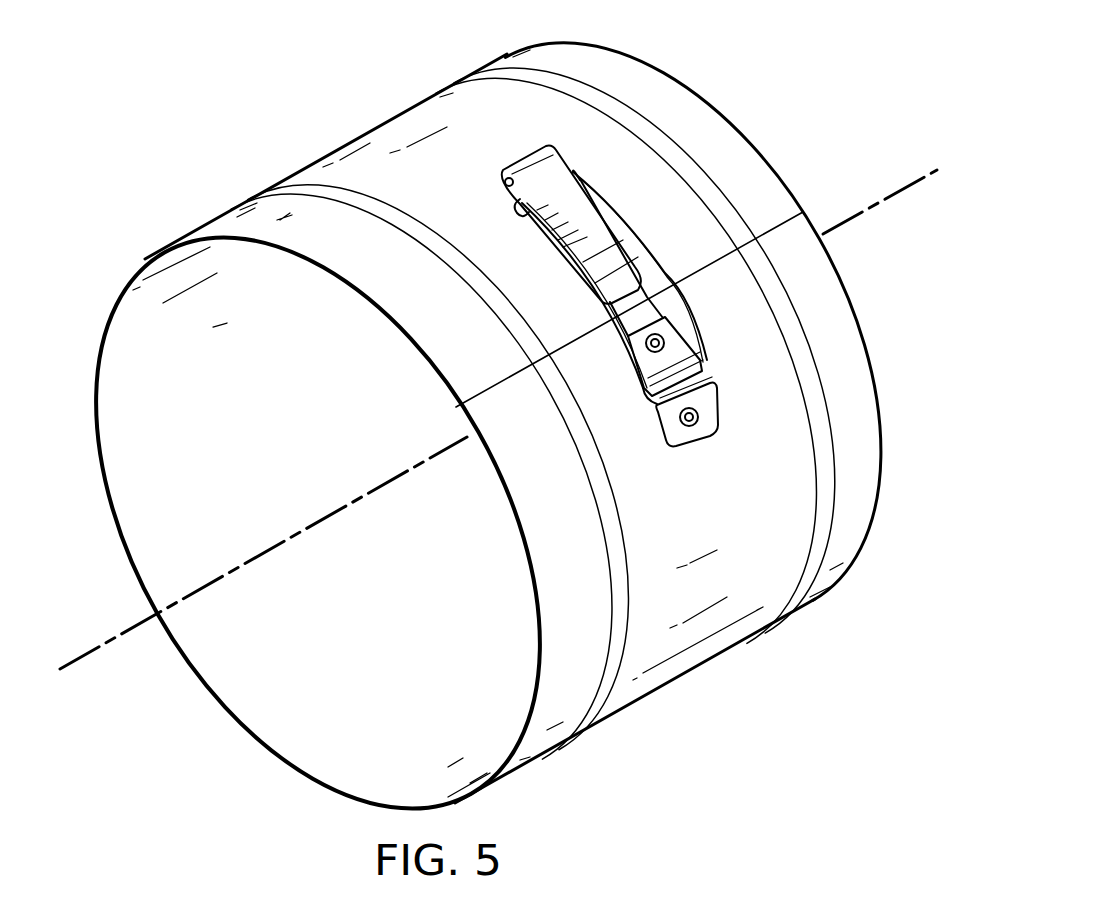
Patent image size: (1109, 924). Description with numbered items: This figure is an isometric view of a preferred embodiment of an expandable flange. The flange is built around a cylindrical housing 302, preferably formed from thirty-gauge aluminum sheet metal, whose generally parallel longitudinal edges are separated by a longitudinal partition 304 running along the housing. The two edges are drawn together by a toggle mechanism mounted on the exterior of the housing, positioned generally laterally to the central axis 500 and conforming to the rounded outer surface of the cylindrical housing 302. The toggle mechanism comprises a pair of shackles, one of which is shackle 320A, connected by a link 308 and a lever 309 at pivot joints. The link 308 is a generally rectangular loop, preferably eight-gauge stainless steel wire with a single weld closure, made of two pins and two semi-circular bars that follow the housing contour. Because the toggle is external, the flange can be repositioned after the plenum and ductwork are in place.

The cylindrical housing 302 is at (677, 77).
The longitudinal partition 304 is at (788, 218).
The link 308 is at (686, 302).
The lever 309 is at (520, 150).
The shackle 320A is at (695, 443).
The central axis 500 is at (263, 557).